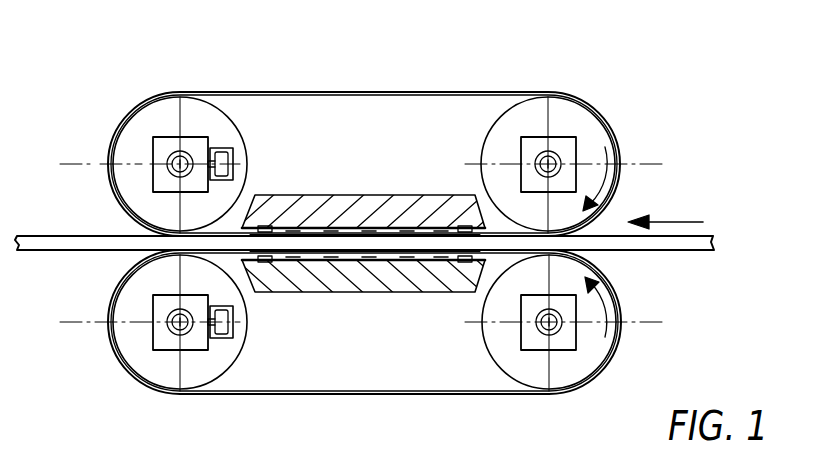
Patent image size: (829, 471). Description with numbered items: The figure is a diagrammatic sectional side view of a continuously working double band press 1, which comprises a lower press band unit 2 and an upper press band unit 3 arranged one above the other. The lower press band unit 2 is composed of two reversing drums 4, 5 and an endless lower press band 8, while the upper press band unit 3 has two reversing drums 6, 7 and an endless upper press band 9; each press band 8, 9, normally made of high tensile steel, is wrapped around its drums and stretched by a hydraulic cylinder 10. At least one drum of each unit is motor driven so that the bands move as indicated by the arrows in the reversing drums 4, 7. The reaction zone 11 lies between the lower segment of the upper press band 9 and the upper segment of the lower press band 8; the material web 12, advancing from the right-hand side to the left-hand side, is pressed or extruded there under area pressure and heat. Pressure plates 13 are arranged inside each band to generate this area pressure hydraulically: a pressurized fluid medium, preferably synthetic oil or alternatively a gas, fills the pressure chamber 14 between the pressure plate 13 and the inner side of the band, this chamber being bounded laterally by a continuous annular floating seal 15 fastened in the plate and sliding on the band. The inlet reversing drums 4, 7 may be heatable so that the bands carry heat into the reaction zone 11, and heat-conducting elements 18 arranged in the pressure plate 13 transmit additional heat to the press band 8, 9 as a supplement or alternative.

The double band press 1 is at (320, 68).
The lower press band unit 2 is at (330, 360).
The upper press band unit 3 is at (361, 133).
The reversing drum 4 is at (592, 352).
The reversing drum 5 is at (150, 362).
The reversing drum 6 is at (136, 128).
The reversing drum 7 is at (590, 133).
The lower press band 8 is at (498, 396).
The upper press band 9 is at (262, 91).
The hydraulic cylinder 10 is at (222, 147).
The reaction zone 11 is at (378, 250).
The material web 12 is at (652, 239).
The pressure plate 13 is at (438, 207).
The pressure chamber 14 is at (386, 232).
The floating seal 15 is at (263, 225).
The heat-conducting elements 18 is at (397, 230).